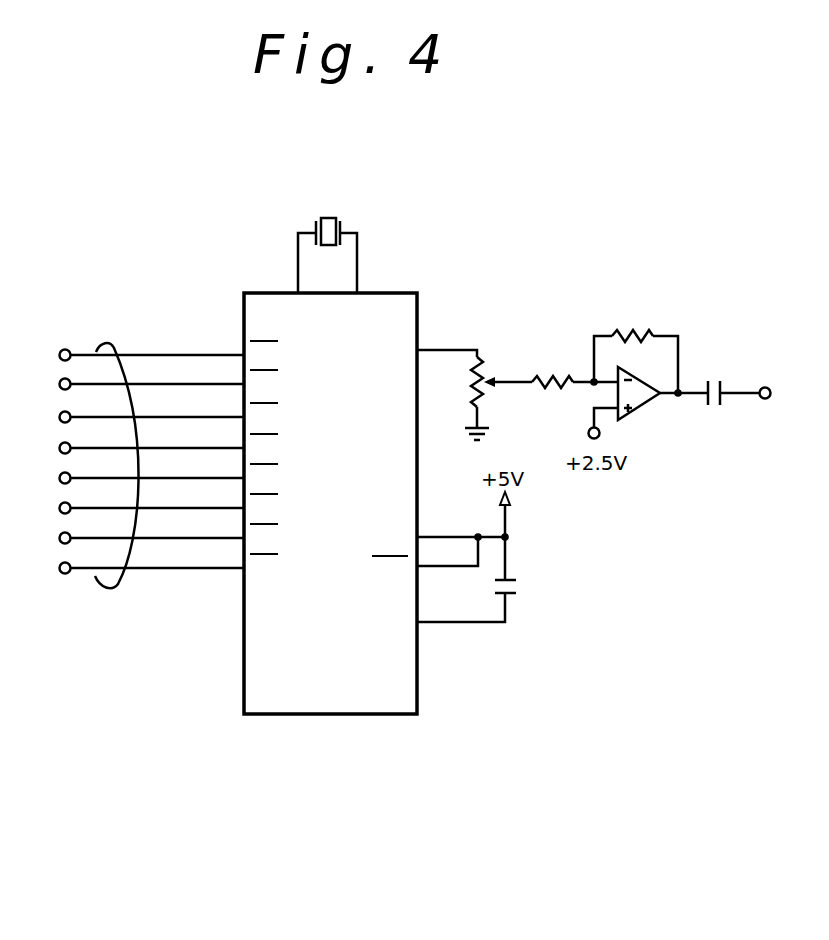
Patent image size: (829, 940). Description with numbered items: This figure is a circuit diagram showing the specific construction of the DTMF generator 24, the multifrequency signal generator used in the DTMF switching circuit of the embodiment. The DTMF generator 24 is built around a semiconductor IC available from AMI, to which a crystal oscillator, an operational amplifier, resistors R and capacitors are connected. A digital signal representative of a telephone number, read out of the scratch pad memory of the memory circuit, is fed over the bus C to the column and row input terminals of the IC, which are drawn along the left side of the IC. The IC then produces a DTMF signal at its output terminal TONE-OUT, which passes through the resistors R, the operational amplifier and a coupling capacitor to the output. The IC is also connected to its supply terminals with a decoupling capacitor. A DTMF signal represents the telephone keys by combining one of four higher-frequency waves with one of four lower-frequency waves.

The DTMF generator 24 is at (330, 716).
The bus c C is at (113, 346).
The resistor R is at (549, 357).